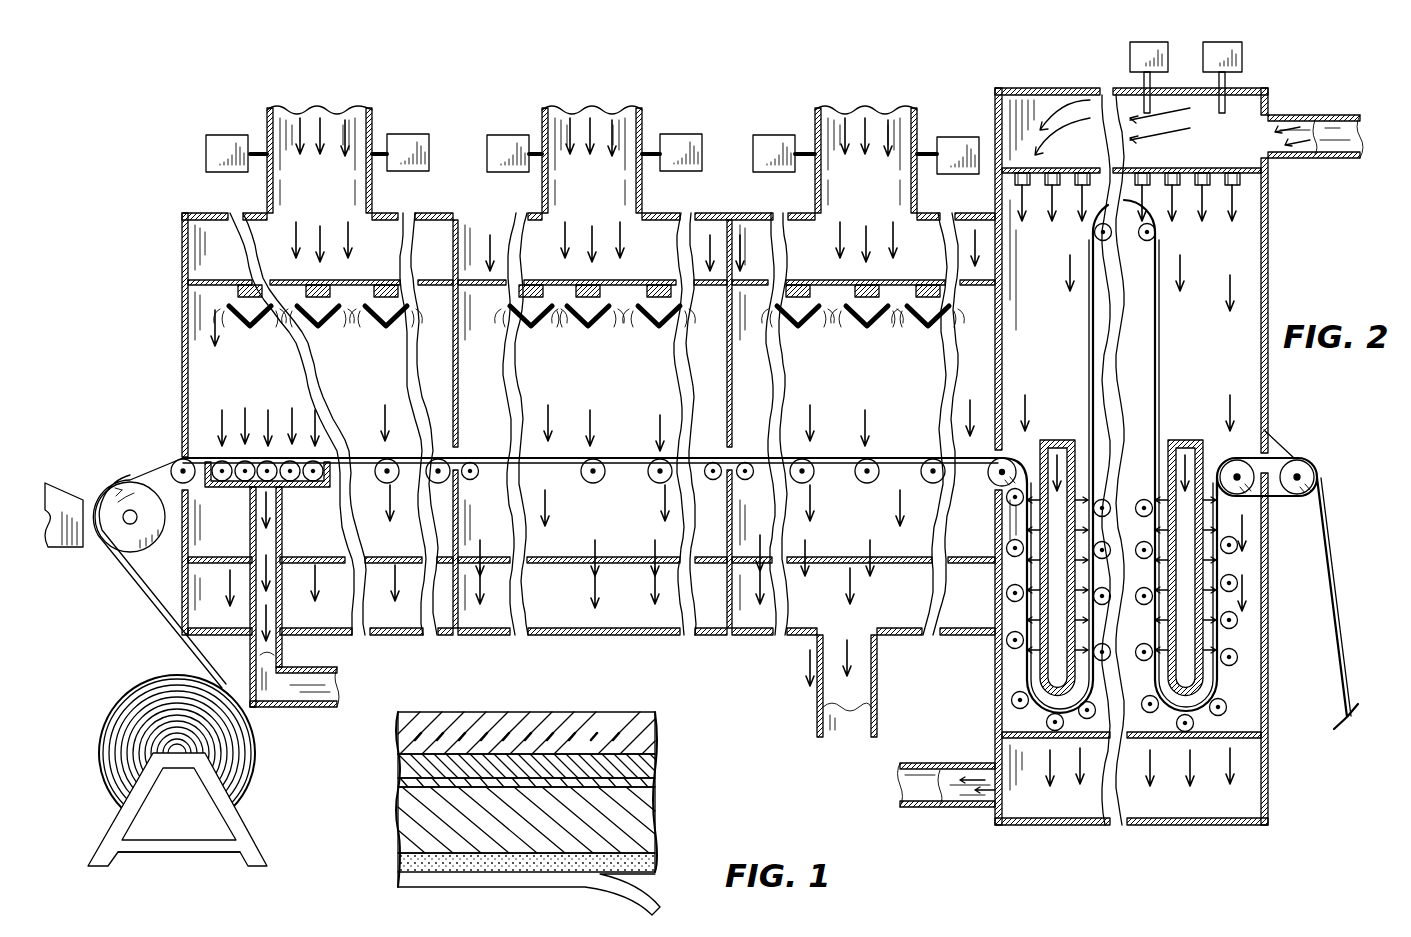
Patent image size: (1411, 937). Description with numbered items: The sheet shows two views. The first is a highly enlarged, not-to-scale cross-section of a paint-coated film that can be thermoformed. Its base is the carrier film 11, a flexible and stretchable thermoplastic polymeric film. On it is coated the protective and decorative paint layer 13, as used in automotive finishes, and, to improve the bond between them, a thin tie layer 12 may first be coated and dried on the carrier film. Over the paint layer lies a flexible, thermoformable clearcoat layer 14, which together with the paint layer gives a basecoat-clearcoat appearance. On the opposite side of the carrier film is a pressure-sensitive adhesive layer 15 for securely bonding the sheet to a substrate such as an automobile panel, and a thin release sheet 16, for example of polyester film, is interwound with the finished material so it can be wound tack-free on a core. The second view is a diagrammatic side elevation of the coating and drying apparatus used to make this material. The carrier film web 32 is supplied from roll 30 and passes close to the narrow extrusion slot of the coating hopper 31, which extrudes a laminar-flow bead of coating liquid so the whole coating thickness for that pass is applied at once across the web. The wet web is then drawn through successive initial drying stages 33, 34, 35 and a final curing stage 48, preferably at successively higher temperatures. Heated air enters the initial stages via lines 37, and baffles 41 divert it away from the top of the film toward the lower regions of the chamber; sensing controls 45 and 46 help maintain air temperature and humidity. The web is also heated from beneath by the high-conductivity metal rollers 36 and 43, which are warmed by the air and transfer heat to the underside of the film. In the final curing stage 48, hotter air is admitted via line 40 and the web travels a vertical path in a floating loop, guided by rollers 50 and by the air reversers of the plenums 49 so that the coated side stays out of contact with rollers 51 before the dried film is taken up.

In FIG. 1, the carrier film 11 is at (655, 818).
In FIG. 1, the tie layer 12 is at (655, 781).
In FIG. 1, the paint layer 13 is at (655, 763).
In FIG. 1, the clearcoat layer 14 is at (655, 740).
In FIG. 1, the pressure-sensitive adhesive layer 15 is at (655, 858).
In FIG. 1, the release sheet 16 is at (505, 890).
In FIG. 2, the roll 30 is at (257, 762).
In FIG. 2, the coating hopper 31 is at (90, 478).
In FIG. 2, the carrier film web 32 is at (122, 458).
In FIG. 2, the initial drying stage 33 is at (292, 404).
In FIG. 2, the initial drying stage 34 is at (612, 404).
In FIG. 2, the initial drying stage 35 is at (890, 404).
In FIG. 2, the metal roller 36 is at (236, 487).
In FIG. 2, the lines 37 is at (298, 108).
In FIG. 2, the line 40 is at (1295, 115).
In FIG. 2, the baffles 41 is at (268, 330).
In FIG. 2, the metal rollers 43 is at (395, 472).
In FIG. 2, the sensing control 45 is at (222, 135).
In FIG. 2, the sensing control 46 is at (408, 134).
In FIG. 2, the final curing stage 48 is at (1220, 316).
In FIG. 2, the plenums 49 is at (1057, 440).
In FIG. 2, the rollers 50 is at (1093, 262).
In FIG. 2, the rollers 51 is at (1012, 690).